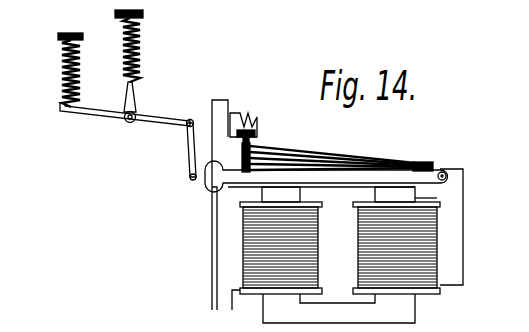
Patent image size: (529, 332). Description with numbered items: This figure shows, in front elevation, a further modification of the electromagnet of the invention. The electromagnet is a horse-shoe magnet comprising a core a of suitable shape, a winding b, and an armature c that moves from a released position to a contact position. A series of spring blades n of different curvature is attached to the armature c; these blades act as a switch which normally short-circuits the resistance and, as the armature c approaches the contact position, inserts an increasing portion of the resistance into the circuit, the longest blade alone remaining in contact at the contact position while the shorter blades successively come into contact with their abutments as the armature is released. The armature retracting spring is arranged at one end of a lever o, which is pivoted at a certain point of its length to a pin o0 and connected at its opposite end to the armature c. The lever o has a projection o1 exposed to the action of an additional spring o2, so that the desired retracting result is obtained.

The lever o is at (165, 117).
The pin o0 is at (113, 122).
The projection o1 is at (137, 93).
The additional spring o2 is at (137, 45).
The spring blades n is at (296, 149).
The armature c is at (355, 177).
The winding b is at (360, 258).
The core a is at (328, 312).